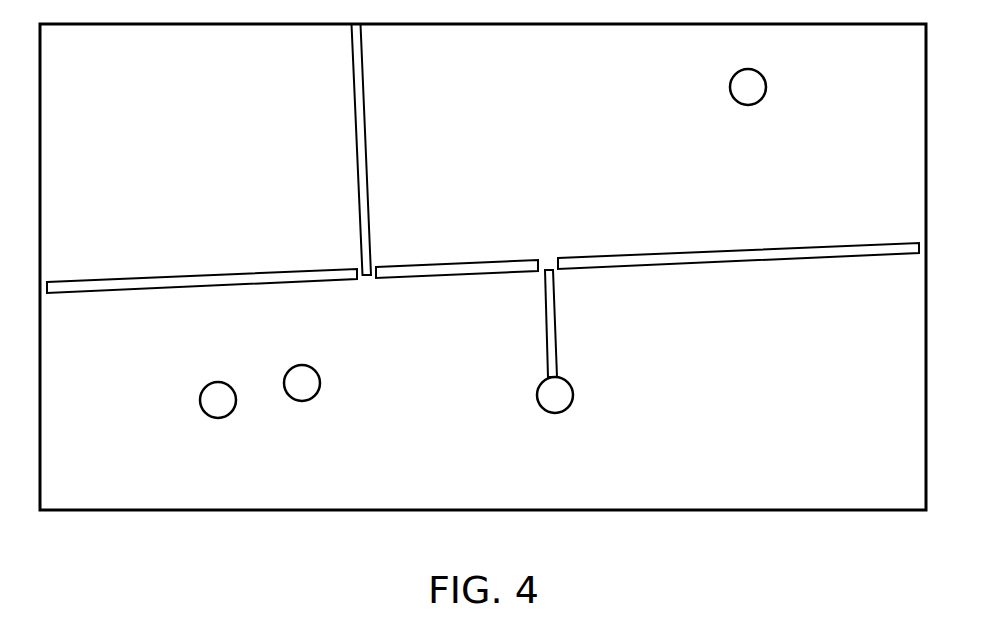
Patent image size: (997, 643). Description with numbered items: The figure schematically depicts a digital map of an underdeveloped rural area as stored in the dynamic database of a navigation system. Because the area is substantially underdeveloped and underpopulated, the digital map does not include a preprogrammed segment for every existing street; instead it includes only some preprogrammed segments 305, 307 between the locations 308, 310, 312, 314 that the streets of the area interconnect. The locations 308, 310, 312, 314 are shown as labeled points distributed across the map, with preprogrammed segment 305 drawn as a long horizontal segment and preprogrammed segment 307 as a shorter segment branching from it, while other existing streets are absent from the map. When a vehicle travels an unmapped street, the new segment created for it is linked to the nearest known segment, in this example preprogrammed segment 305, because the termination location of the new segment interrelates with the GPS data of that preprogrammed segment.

The preprogrammed segment 305 is at (682, 258).
The preprogrammed segment 307 is at (361, 130).
The location 308 is at (200, 402).
The location 310 is at (302, 401).
The location 312 is at (549, 413).
The location 314 is at (730, 84).